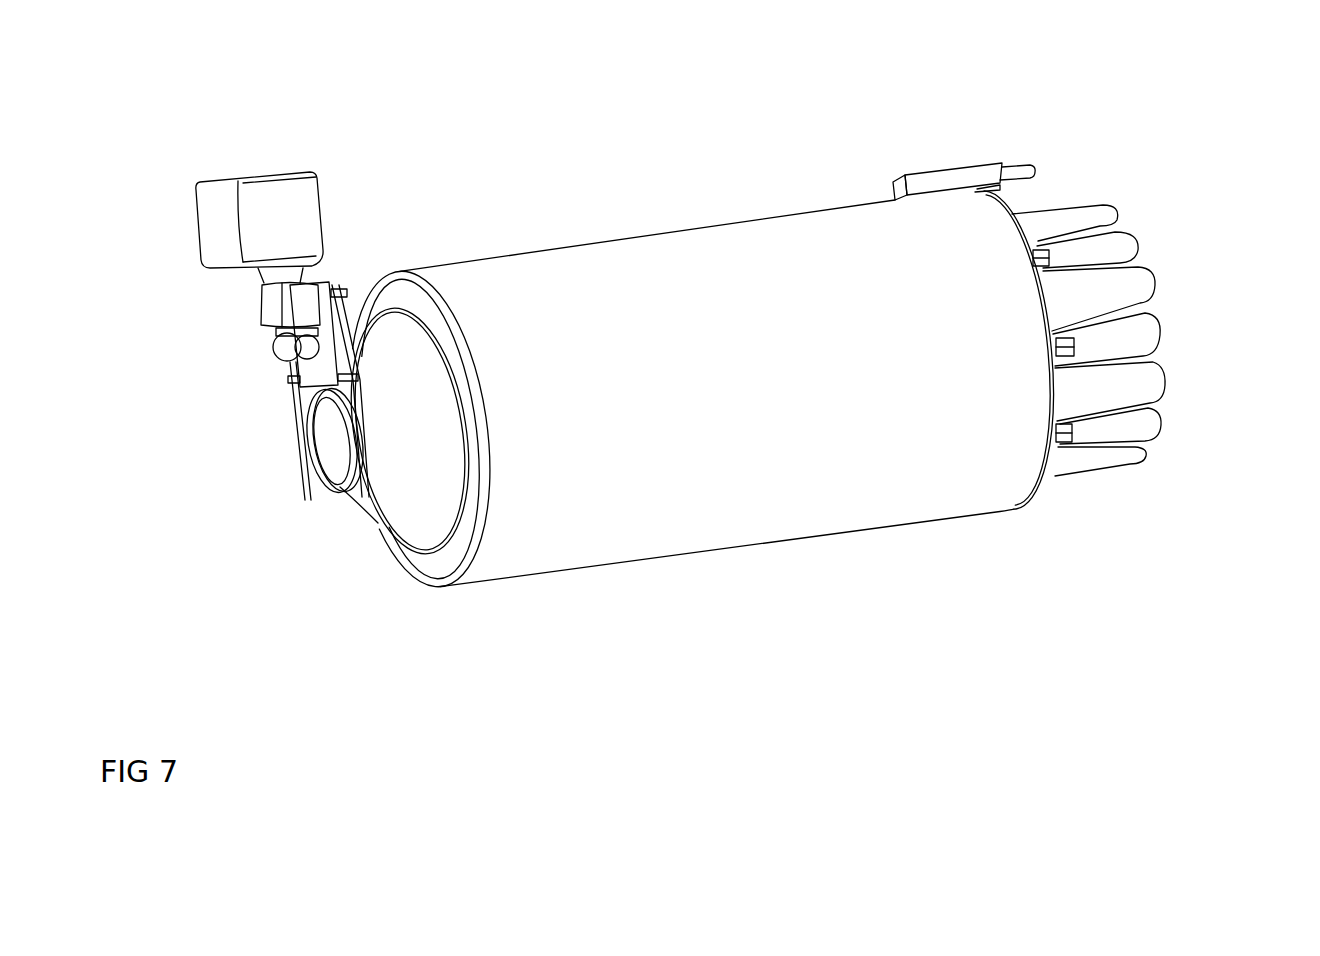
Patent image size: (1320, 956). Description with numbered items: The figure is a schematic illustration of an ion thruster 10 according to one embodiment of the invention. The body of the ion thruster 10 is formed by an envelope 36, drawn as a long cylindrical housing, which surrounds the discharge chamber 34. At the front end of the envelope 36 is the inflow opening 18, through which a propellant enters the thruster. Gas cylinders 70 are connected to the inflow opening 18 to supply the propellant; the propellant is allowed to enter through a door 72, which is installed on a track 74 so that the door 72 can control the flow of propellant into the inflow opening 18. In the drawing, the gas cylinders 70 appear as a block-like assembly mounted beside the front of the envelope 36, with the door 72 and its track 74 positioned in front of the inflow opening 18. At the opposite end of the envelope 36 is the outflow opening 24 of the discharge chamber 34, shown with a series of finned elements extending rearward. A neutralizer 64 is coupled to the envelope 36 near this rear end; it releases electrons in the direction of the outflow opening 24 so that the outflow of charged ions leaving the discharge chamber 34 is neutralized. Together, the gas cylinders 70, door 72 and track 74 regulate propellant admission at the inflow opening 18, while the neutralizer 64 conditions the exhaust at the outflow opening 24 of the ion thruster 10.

The ion thruster 10 is at (872, 573).
The inflow opening 18 is at (283, 470).
The outflow opening 24 is at (1190, 385).
The discharge chamber 34 is at (1113, 253).
The envelope 36 is at (722, 283).
The neutralizer 64 is at (1023, 168).
The gas cylinders 70 is at (298, 217).
The door 72 is at (328, 330).
The track 74 is at (293, 423).